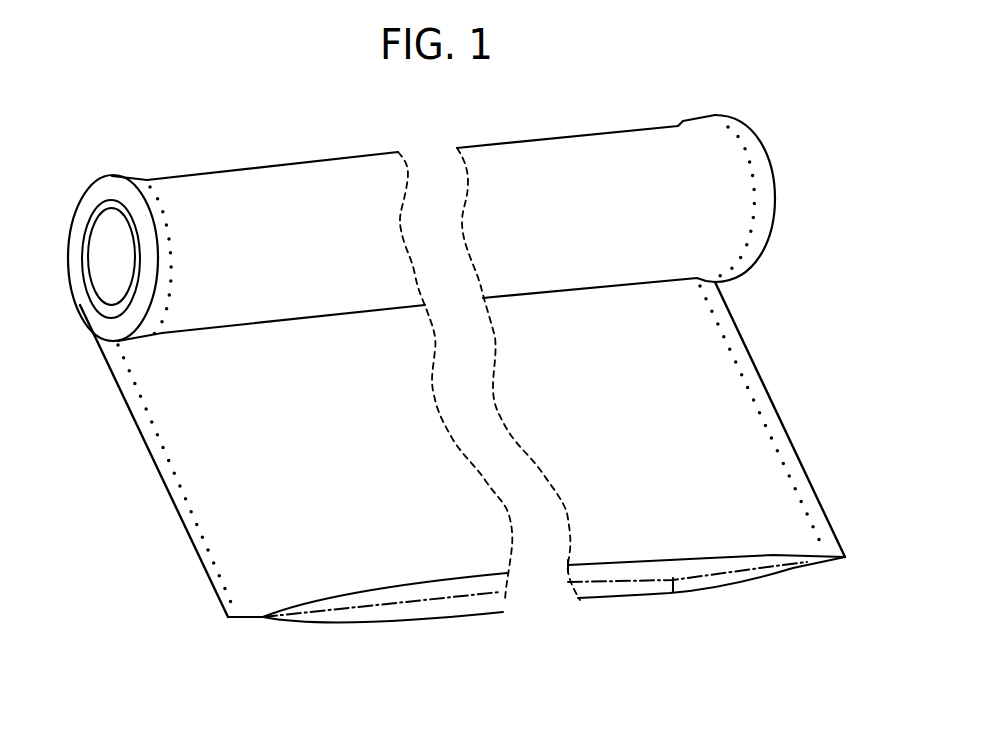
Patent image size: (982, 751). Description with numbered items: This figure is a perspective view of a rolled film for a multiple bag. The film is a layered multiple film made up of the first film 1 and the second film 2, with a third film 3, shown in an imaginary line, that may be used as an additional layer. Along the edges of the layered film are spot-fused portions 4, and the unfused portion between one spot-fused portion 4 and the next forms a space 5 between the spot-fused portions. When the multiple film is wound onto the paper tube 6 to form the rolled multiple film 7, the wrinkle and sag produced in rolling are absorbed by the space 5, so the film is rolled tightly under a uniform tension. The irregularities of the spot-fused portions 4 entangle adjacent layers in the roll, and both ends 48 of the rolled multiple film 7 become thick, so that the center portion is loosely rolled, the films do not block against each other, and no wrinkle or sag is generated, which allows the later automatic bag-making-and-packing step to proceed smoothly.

The first film 1 is at (775, 572).
The second film 2 is at (727, 588).
The third film 3 is at (670, 598).
The spot-fused portion 4 is at (737, 327).
The space between the spot-fused portions 5 is at (157, 450).
The paper tube for rolling 6 is at (93, 305).
The rolled multiple film 7 is at (598, 153).
The ends 48 is at (128, 168).